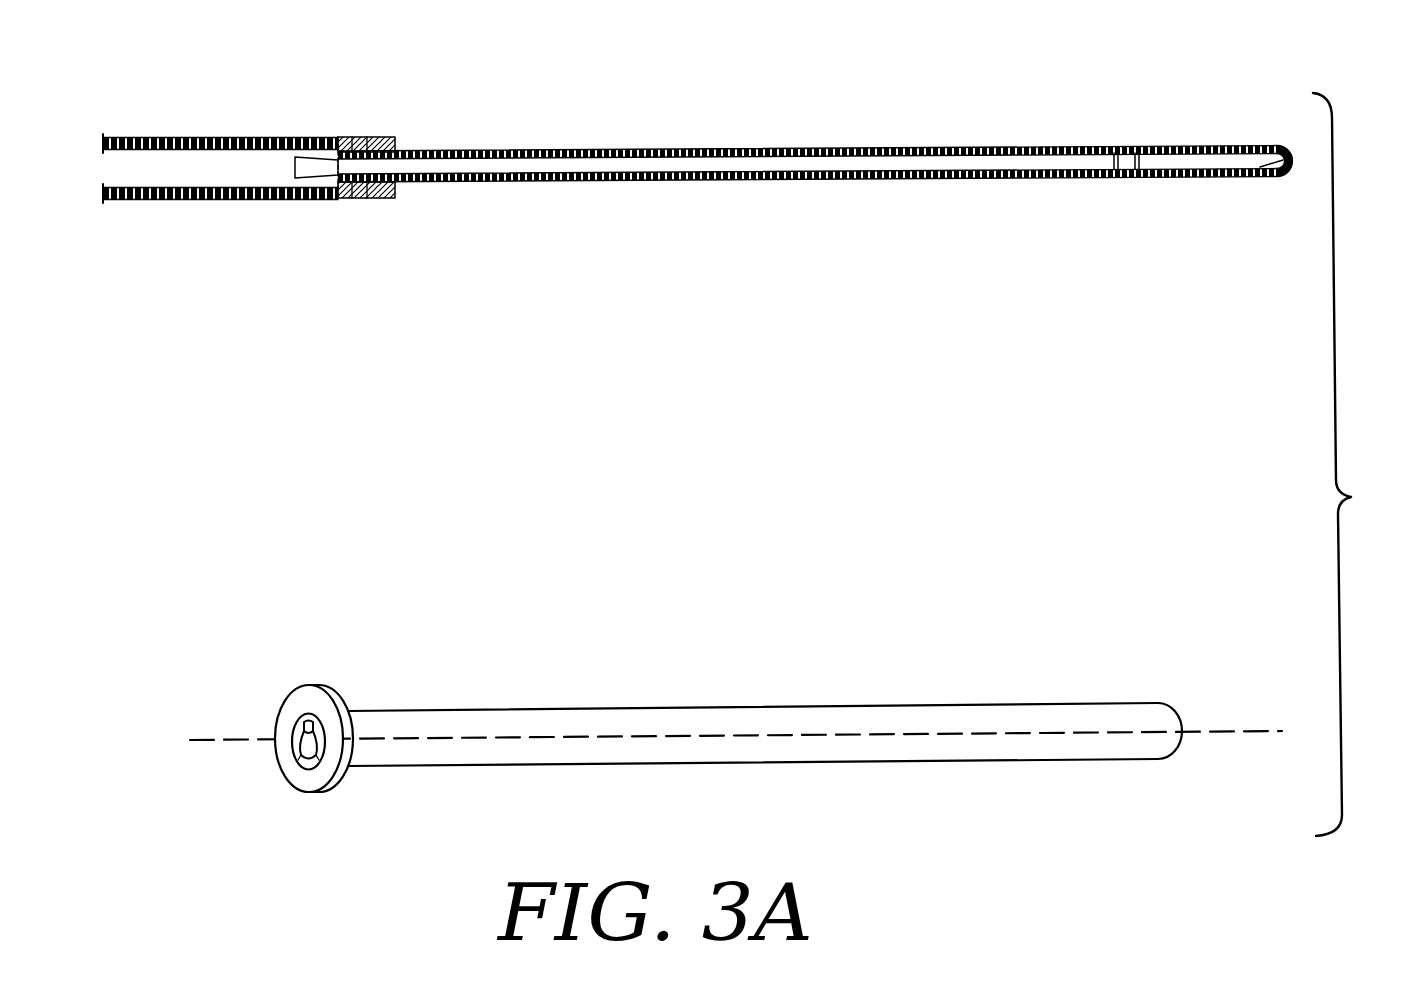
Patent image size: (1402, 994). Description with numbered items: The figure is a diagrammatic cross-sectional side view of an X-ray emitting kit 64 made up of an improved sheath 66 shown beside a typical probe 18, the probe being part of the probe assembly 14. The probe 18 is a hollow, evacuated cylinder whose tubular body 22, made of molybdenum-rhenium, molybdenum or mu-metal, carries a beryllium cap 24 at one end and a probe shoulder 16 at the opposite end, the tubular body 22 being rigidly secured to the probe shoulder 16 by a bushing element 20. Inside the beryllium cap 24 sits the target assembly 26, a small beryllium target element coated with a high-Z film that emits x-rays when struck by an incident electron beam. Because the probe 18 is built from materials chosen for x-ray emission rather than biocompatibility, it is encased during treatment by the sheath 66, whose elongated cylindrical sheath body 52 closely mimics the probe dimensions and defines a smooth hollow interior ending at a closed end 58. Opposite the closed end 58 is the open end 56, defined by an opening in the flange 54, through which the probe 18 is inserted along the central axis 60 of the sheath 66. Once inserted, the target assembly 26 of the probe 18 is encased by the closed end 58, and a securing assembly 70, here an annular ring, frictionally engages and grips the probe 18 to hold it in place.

The probe assembly 14 is at (225, 100).
The probe shoulder 16 is at (263, 137).
The probe 18 is at (731, 125).
The bushing element 20 is at (395, 142).
The tubular body 22 is at (987, 147).
The beryllium cap 24 is at (1235, 145).
The target assembly 26 is at (1255, 172).
The X-ray emitting kit 64 is at (1381, 510).
The improved sheath 66 is at (715, 655).
The sheath body 52 is at (737, 758).
The flange 54 is at (302, 777).
The open end 56 is at (268, 717).
The closed end 58 is at (1172, 753).
The central axis 60 is at (1205, 730).
The securing assembly 70 is at (318, 722).